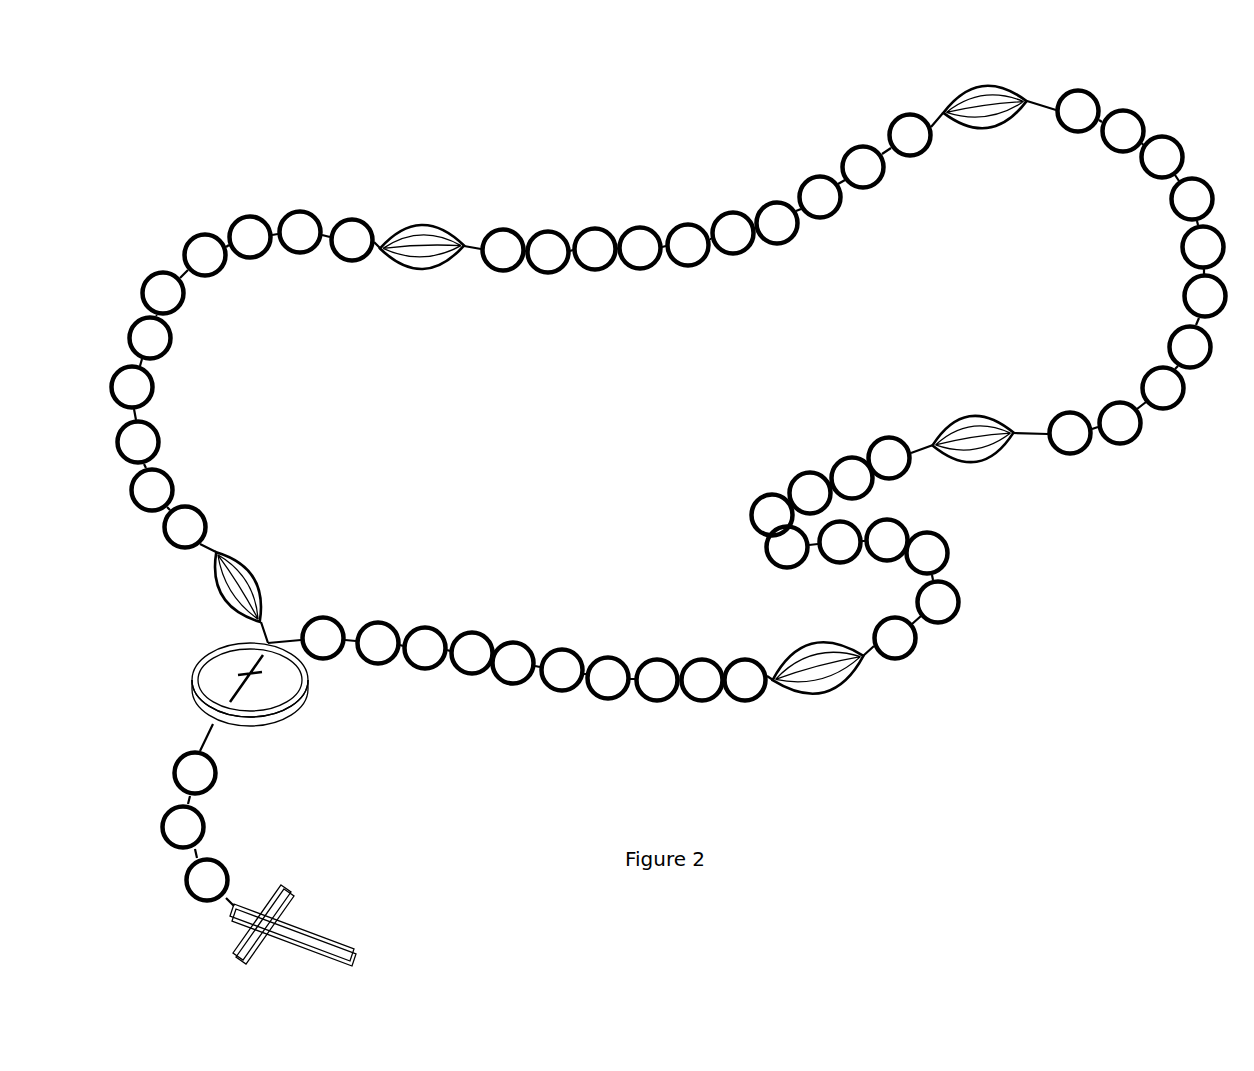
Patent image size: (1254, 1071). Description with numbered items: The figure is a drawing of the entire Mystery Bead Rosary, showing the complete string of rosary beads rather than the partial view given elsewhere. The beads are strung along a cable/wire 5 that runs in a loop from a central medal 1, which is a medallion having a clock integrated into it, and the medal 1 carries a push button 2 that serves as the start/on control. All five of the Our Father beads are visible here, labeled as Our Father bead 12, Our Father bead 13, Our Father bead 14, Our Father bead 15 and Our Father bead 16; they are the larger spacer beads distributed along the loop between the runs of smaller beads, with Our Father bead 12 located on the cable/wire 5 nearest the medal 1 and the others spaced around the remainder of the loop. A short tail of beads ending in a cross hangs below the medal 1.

The medal 1 is at (308, 718).
The push button 2 is at (312, 672).
The cable/wire 5 is at (272, 627).
The Our Father bead 12 is at (258, 563).
The Our Father bead 13 is at (423, 278).
The Our Father bead 14 is at (988, 130).
The Our Father bead 15 is at (992, 468).
The Our Father bead 16 is at (832, 703).